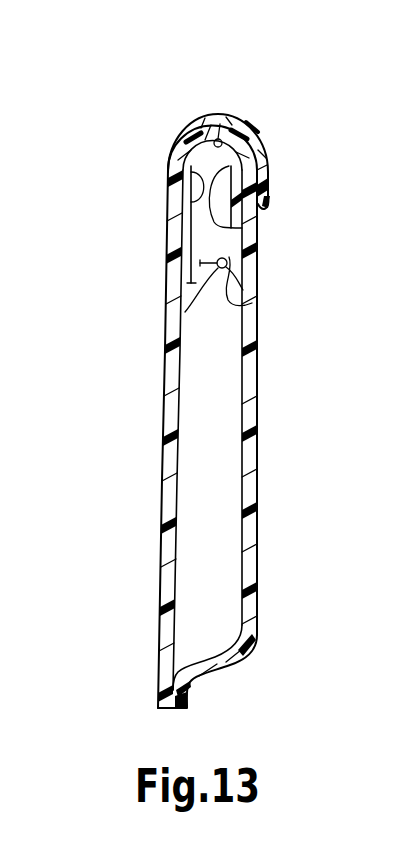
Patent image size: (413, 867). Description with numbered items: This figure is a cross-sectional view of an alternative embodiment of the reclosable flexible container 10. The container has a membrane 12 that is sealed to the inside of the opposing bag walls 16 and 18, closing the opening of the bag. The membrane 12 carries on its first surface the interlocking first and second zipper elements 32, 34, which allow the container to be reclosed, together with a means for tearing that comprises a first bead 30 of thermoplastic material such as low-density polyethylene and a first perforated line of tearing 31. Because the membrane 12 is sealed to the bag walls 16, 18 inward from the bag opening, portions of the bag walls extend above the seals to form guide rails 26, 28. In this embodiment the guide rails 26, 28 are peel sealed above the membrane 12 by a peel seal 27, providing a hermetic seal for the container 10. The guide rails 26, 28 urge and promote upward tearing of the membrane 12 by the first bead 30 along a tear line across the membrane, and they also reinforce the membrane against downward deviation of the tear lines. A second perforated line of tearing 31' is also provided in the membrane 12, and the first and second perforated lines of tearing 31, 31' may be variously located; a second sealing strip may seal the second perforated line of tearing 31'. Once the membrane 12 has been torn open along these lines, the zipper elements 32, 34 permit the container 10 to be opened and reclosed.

The reclosable flexible container 10 is at (136, 607).
The membrane 12 is at (237, 266).
The bag wall 16 is at (163, 473).
The bag wall 18 is at (250, 453).
The guide rail 26 is at (182, 137).
The peel seal 27 is at (272, 198).
The guide rail 28 is at (252, 123).
The first bead 30 is at (216, 140).
The first perforated line of tearing 31 is at (292, 197).
The second perforated line of tearing 31' is at (144, 224).
The first zipper element 32 is at (186, 313).
The second zipper element 34 is at (236, 304).